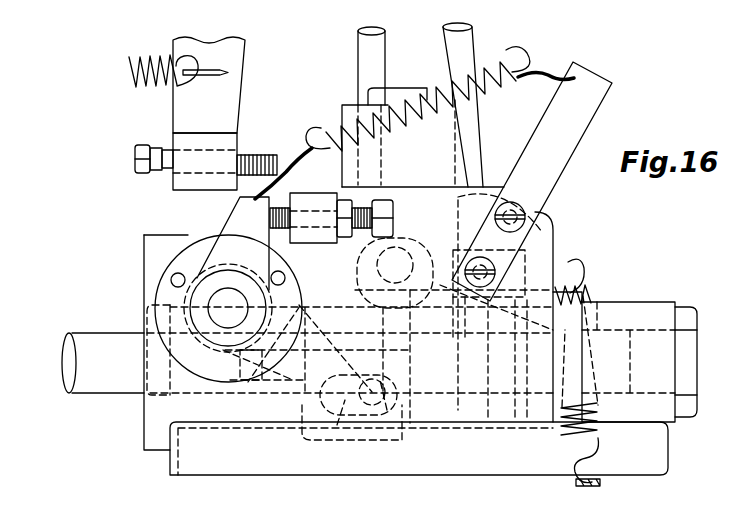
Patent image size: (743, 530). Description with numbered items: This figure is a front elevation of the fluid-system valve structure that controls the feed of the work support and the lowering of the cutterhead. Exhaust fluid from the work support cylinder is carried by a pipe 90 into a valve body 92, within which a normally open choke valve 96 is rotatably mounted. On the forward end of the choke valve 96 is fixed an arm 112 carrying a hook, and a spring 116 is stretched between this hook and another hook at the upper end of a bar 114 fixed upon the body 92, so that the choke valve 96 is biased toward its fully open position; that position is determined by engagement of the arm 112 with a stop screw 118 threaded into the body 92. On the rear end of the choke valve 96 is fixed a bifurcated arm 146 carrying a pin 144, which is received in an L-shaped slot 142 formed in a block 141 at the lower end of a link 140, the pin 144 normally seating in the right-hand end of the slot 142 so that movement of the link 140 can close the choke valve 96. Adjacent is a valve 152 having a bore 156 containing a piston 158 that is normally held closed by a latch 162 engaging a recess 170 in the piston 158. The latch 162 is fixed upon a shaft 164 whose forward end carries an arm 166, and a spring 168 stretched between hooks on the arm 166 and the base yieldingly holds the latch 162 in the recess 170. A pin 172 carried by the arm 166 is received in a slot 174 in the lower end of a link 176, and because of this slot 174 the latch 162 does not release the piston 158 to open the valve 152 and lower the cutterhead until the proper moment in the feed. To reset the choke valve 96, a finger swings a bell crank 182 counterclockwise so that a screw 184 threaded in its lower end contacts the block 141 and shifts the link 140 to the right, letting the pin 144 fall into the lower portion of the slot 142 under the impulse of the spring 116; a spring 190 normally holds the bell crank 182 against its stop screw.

The pipe 90 is at (72, 336).
The valve body 92 is at (144, 235).
The choke valve 96 is at (222, 303).
The arm 112 is at (236, 215).
The bar 114 is at (547, 197).
The spring 116 is at (449, 90).
The stop screw 118 is at (283, 244).
The link 140 is at (362, 46).
The block 141 is at (312, 432).
The L-shaped slot 142 is at (337, 425).
The pin 144 is at (372, 385).
The bifurcated arm 146 is at (387, 410).
The valve 152 is at (653, 307).
The bore 156 is at (458, 410).
The piston 158 is at (430, 380).
The latch 162 is at (584, 294).
The shaft 164 is at (400, 252).
The arm 166 is at (553, 254).
The spring 168 is at (592, 432).
The recess 170 is at (562, 407).
The pin 172 is at (553, 238).
The slot 174 is at (490, 420).
The link 176 is at (467, 46).
The bell crank 182 is at (180, 107).
The screw 184 is at (259, 157).
The spring 190 is at (130, 62).